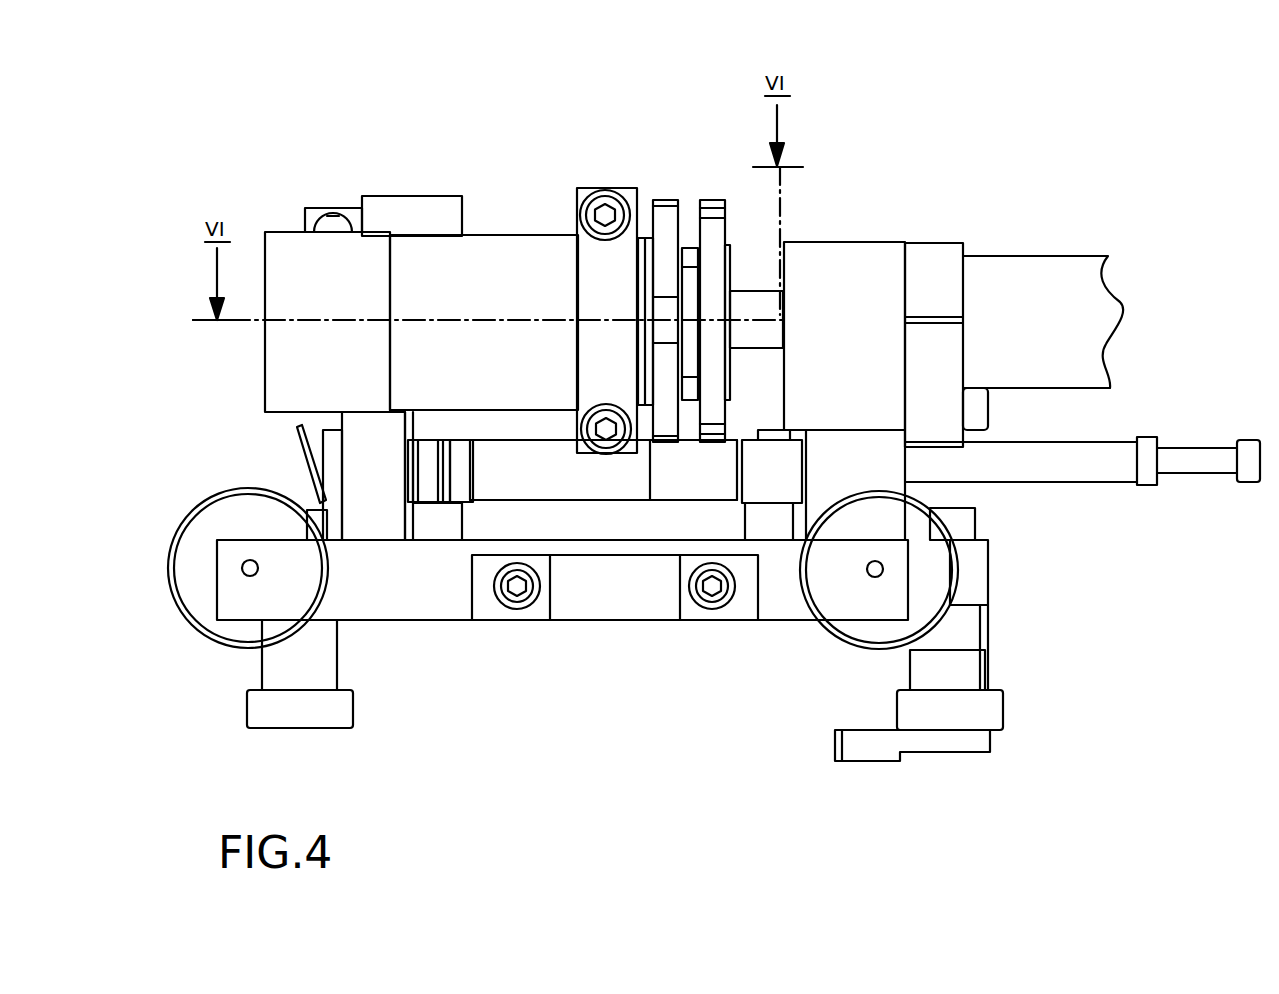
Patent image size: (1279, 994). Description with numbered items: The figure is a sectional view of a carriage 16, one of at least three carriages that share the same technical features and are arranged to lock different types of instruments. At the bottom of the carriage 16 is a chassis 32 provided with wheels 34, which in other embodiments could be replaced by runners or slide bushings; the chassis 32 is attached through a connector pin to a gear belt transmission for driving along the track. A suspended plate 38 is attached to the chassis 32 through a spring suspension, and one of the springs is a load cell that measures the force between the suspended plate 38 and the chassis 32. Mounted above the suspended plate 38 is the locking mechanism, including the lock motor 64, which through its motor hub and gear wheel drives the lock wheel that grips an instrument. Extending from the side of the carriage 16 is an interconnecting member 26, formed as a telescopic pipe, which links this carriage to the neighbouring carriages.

The carriage 16 is at (248, 152).
The interconnecting member 26 is at (1035, 272).
The lock motor 64 is at (290, 376).
The suspended plate 38 is at (560, 468).
The chassis 32 is at (779, 598).
The wheel 34 is at (871, 631).